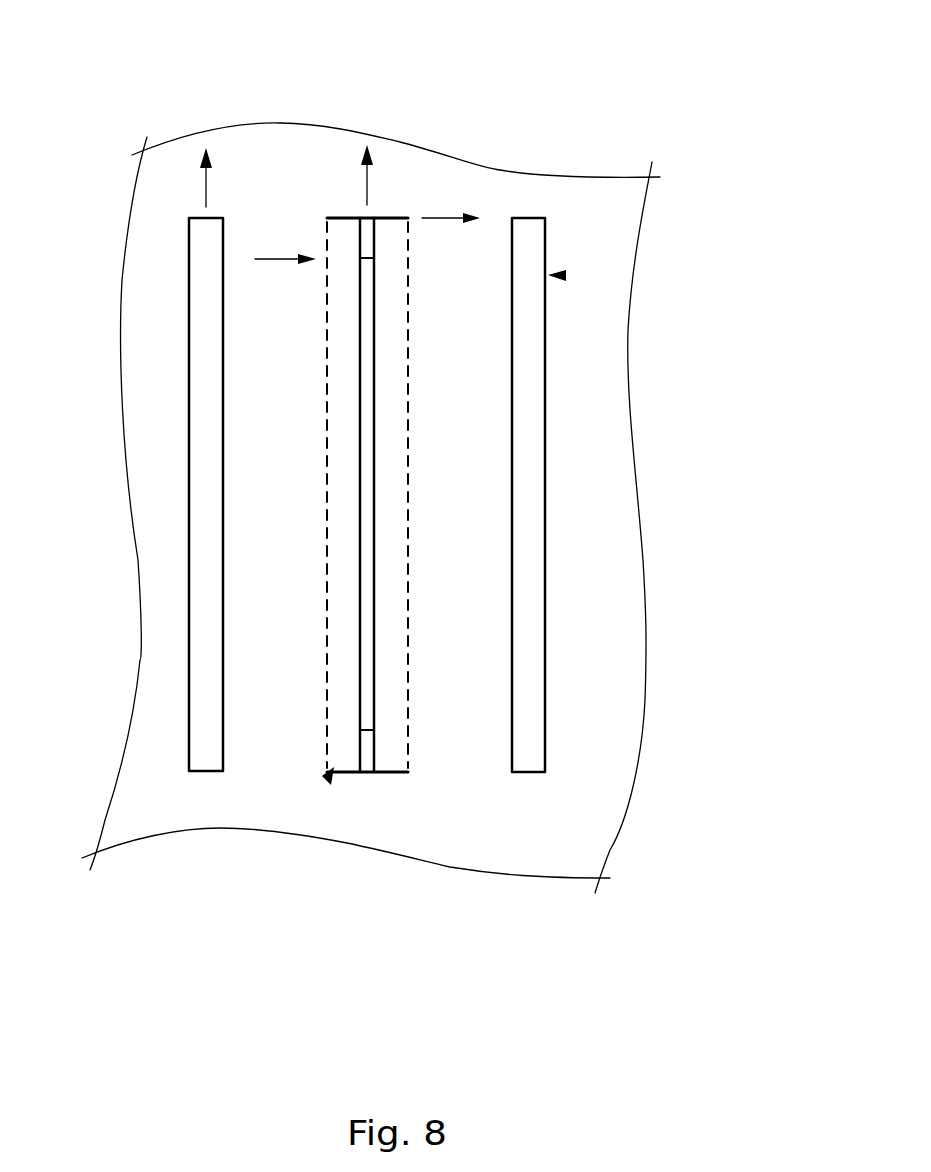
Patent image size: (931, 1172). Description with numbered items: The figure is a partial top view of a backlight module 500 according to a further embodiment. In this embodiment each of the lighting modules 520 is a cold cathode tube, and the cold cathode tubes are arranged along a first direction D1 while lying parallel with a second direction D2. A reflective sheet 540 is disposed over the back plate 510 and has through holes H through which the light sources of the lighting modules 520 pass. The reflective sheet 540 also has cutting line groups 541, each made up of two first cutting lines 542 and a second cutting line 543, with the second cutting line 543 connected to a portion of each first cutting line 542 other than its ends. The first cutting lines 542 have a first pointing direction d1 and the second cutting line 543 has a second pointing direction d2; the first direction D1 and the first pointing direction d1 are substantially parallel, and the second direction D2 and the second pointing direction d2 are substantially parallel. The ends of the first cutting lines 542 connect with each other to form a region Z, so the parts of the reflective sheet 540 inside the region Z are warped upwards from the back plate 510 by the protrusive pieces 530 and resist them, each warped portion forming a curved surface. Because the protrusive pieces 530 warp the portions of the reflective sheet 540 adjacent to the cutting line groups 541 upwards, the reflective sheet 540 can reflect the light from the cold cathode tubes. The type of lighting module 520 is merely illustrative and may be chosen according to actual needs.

The backlight module 500 is at (70, 32).
The back plate 510 is at (367, 773).
The lighting module 520 is at (532, 383).
The protrusive piece 530 is at (368, 430).
The reflective sheet 540 is at (613, 512).
The cutting line group 541 is at (388, 985).
The first cutting line 542 is at (390, 217).
The second cutting line 543 is at (375, 688).
The first direction D1 is at (282, 258).
The second direction D2 is at (205, 188).
The first pointing direction d1 is at (442, 213).
The second pointing direction d2 is at (365, 180).
The through hole H is at (562, 276).
The region Z is at (328, 783).